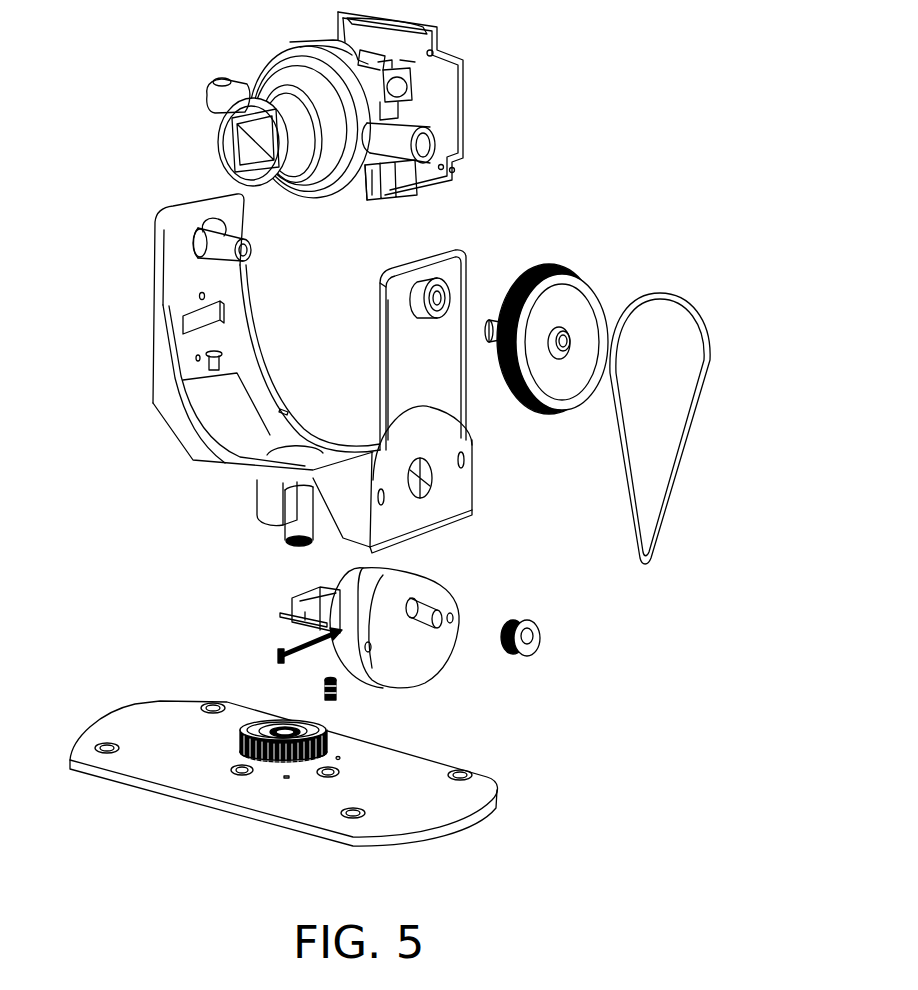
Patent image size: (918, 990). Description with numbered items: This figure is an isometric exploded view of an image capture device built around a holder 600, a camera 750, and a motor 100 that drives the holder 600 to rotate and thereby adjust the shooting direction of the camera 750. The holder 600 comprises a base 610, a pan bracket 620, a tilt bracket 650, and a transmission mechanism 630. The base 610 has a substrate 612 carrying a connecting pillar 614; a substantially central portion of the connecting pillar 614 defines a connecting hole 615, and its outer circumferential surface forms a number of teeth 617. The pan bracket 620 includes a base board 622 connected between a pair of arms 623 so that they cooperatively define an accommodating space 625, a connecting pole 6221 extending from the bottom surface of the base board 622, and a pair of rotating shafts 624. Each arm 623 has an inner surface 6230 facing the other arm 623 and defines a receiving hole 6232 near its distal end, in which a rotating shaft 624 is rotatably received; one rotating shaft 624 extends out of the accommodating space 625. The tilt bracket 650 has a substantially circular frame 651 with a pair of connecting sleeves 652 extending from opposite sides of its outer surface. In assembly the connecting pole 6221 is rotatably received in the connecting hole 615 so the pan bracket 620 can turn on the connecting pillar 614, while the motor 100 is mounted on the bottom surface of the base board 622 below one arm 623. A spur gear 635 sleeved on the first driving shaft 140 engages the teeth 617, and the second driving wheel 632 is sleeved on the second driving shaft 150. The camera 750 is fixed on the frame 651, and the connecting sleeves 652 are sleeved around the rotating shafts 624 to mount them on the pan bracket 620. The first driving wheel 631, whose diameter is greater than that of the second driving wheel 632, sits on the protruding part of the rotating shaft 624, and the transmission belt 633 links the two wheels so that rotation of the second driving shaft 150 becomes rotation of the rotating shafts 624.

The motor 100 is at (417, 634).
The first driving shaft 140 is at (327, 660).
The second driving shaft 150 is at (423, 610).
The holder 600 is at (278, 348).
The base 610 is at (325, 770).
The substrate 612 is at (422, 802).
The connecting pillar 614 is at (270, 767).
The connecting hole 615 is at (273, 725).
The teeth 617 is at (247, 757).
The pan bracket 620 is at (298, 348).
The base board 622 is at (225, 463).
The connecting pole 6221 is at (300, 528).
The arms 623 is at (160, 283).
The inner surface 6230 is at (215, 272).
The receiving hole 6232 is at (213, 222).
The rotating shafts 624 is at (210, 237).
The accommodating space 625 is at (330, 349).
The transmission mechanism 630 is at (603, 464).
The first driving wheel 631 is at (535, 417).
The second driving wheel 632 is at (540, 637).
The transmission belt 633 is at (640, 545).
The spur gear 635 is at (338, 683).
The tilt bracket 650 is at (407, 105).
The frame 651 is at (343, 82).
The connecting sleeves 652 is at (403, 147).
The camera 750 is at (270, 105).